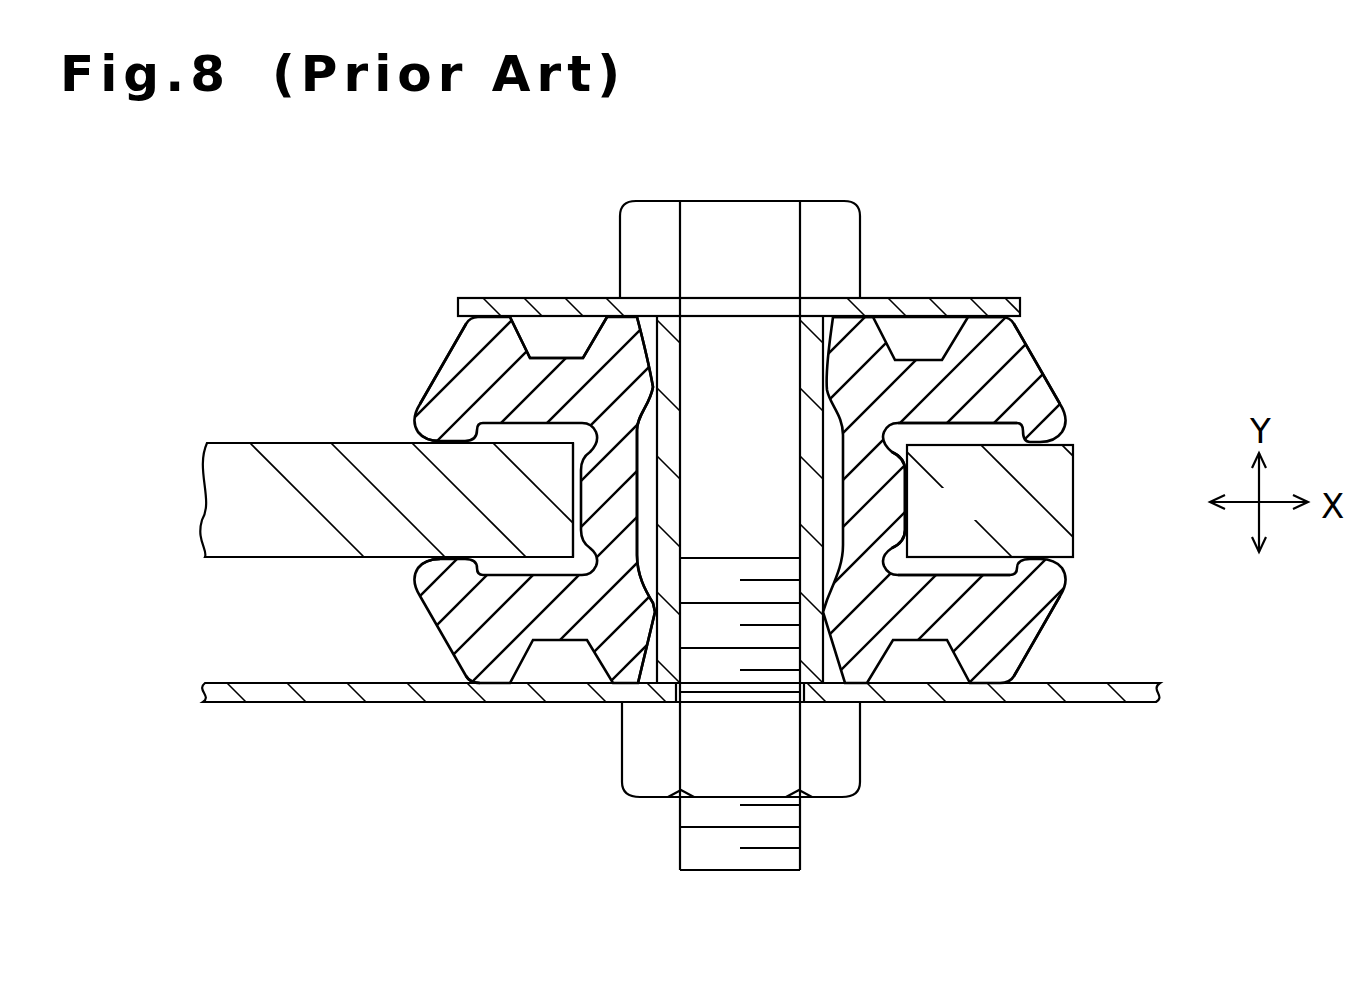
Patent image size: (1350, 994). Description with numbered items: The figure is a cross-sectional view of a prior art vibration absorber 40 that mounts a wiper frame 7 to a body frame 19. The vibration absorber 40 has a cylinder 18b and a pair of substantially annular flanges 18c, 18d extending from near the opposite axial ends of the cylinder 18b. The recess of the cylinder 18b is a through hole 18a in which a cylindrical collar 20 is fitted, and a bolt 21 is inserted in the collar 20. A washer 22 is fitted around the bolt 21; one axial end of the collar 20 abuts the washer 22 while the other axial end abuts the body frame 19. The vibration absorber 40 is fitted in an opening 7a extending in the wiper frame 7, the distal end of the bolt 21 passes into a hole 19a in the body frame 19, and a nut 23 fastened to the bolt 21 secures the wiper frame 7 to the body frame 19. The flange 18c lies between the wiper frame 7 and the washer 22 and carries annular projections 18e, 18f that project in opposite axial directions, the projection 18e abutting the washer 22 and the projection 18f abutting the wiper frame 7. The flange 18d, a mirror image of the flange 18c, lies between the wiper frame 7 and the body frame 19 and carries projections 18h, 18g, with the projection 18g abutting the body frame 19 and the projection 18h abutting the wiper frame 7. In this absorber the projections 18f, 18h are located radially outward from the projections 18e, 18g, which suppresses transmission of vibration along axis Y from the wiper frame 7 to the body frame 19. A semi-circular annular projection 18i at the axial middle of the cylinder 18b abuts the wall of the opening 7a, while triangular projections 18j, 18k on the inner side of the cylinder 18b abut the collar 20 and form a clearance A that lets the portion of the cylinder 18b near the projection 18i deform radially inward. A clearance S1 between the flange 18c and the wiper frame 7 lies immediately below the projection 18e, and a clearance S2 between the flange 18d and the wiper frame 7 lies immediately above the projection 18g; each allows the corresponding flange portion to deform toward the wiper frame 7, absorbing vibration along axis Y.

The wiper frame 7 is at (232, 445).
The opening 7a is at (580, 460).
The through hole 18a is at (835, 348).
The cylinder 18b is at (868, 334).
The flange 18c is at (1015, 378).
The flange 18d is at (1005, 628).
The annular projection 18e is at (483, 323).
The annular projection 18f is at (425, 435).
The annular projection 18g is at (470, 677).
The annular projection 18h is at (425, 572).
The annular projection 18i is at (900, 493).
The annular projection 18j is at (655, 393).
The annular projection 18k is at (650, 613).
The body frame 19 is at (265, 690).
The hole 19a is at (678, 702).
The collar 20 is at (673, 340).
The bolt 21 is at (760, 212).
The washer 22 is at (950, 306).
The nut 23 is at (840, 783).
The vibration absorber 40 is at (573, 356).
The clearance A is at (658, 487).
The clearance S1 is at (950, 435).
The clearance S2 is at (960, 575).